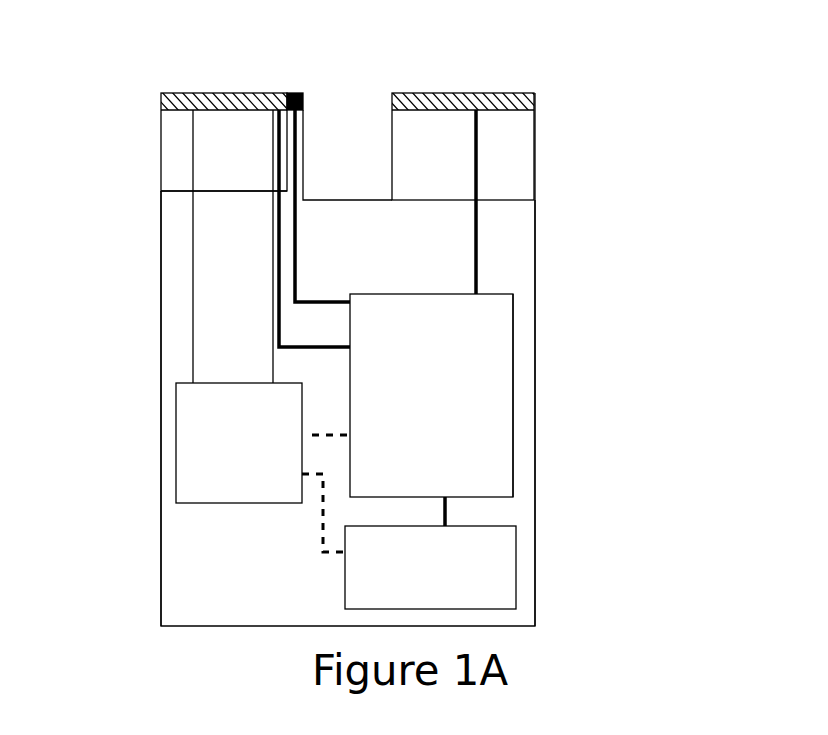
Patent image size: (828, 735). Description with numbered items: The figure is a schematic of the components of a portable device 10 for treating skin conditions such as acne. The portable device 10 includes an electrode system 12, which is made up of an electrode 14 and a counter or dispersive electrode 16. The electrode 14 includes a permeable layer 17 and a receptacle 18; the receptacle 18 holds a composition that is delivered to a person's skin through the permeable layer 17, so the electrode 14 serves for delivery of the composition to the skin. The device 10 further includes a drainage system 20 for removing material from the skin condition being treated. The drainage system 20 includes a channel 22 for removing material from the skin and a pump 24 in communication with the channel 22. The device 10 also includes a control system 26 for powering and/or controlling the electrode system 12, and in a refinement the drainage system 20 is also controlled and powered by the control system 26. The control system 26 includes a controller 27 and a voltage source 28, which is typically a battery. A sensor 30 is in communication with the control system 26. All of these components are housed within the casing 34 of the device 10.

The portable device 10 is at (592, 147).
The electrode system 12 is at (494, 63).
The electrode 14 is at (150, 105).
The counter or dispersive electrode 16 is at (415, 79).
The permeable layer 17 is at (180, 93).
The receptacle 18 is at (168, 190).
The drainage system 20 is at (170, 229).
The channel 22 is at (193, 280).
The pump 24 is at (176, 440).
The control system 26 is at (528, 359).
The controller 27 is at (513, 430).
The voltage source 28 is at (516, 542).
The sensor 30 is at (300, 93).
The casing 34 is at (538, 242).